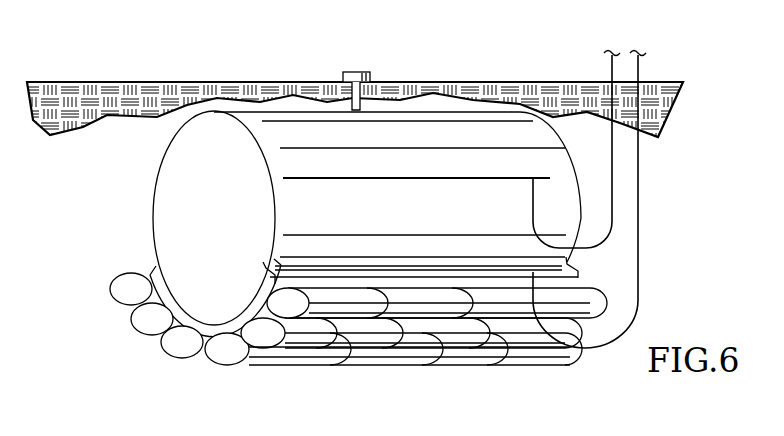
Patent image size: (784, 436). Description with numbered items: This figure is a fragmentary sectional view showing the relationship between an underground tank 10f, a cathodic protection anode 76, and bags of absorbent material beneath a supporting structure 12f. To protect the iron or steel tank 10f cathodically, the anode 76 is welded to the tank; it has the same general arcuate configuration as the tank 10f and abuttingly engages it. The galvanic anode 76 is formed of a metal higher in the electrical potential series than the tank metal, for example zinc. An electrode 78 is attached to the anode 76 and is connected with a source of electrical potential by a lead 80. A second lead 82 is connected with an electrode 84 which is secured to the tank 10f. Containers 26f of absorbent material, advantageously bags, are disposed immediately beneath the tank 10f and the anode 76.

The tank 10f is at (197, 174).
The ceiling support structure 12f is at (347, 97).
The containers of absorbent material 26f is at (187, 340).
The anode 76 is at (237, 315).
The electrode 78 is at (400, 270).
The lead 80 is at (638, 222).
The second lead 82 is at (610, 170).
The electrode 84 is at (463, 182).